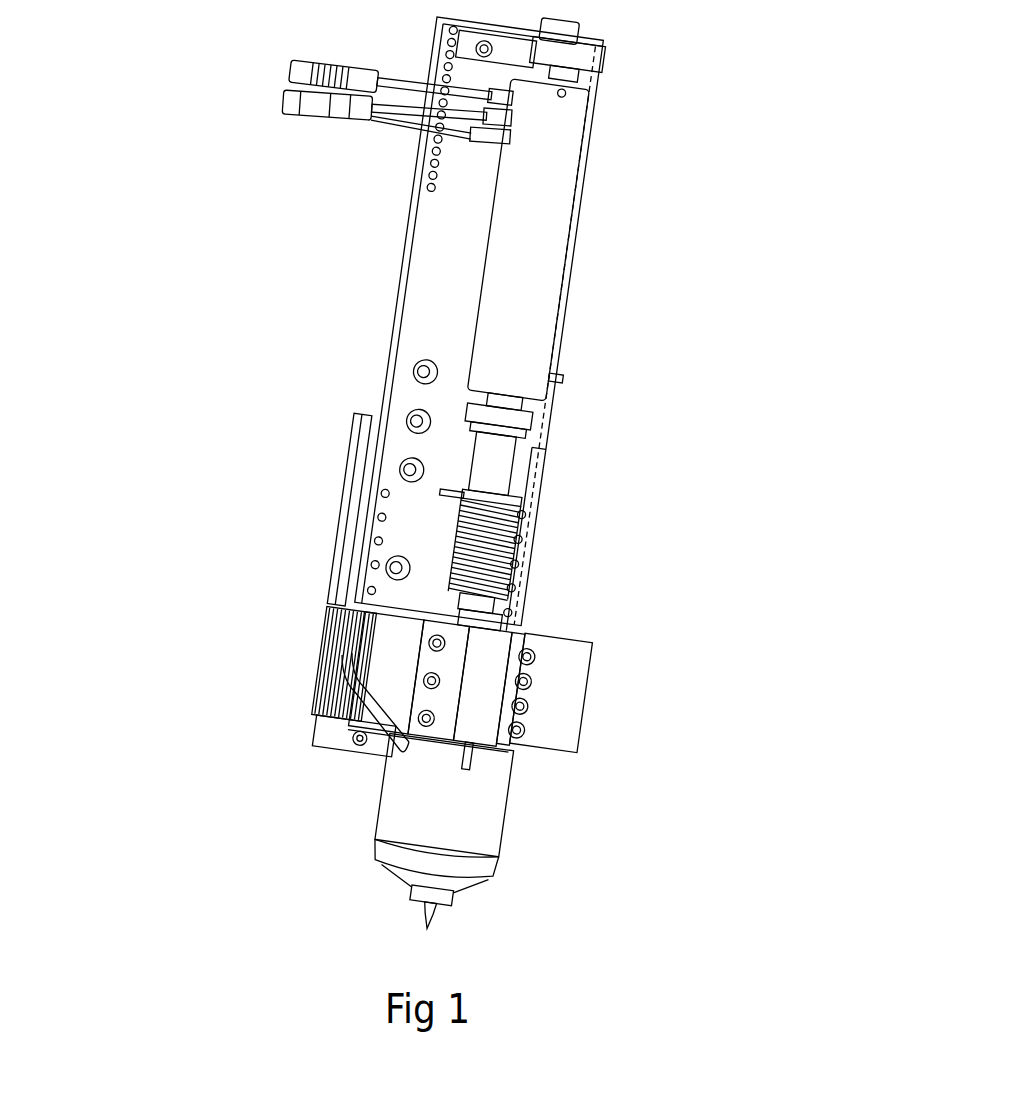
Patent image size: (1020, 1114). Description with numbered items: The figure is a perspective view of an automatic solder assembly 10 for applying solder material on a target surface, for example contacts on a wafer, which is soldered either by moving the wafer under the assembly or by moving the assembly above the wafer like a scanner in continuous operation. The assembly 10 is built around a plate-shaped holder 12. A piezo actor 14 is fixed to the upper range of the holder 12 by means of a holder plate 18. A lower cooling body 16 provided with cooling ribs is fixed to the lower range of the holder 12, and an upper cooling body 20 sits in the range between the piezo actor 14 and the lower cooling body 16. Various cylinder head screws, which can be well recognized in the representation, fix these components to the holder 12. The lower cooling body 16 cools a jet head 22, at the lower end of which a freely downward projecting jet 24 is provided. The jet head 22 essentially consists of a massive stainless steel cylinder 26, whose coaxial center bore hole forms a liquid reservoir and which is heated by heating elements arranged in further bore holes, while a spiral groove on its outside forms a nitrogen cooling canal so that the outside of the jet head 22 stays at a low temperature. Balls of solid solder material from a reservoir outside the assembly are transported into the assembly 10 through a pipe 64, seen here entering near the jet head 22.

The solder assembly 10 is at (737, 328).
The holder 12 is at (412, 326).
The piezo actor 14 is at (544, 192).
The lower cooling body 16 is at (565, 702).
The holder plate 18 is at (563, 54).
The upper cooling body 20 is at (508, 515).
The jet head 22 is at (471, 822).
The jet 24 is at (440, 908).
The stainless steel cylinder 26 is at (402, 737).
The pipe 64 is at (360, 692).